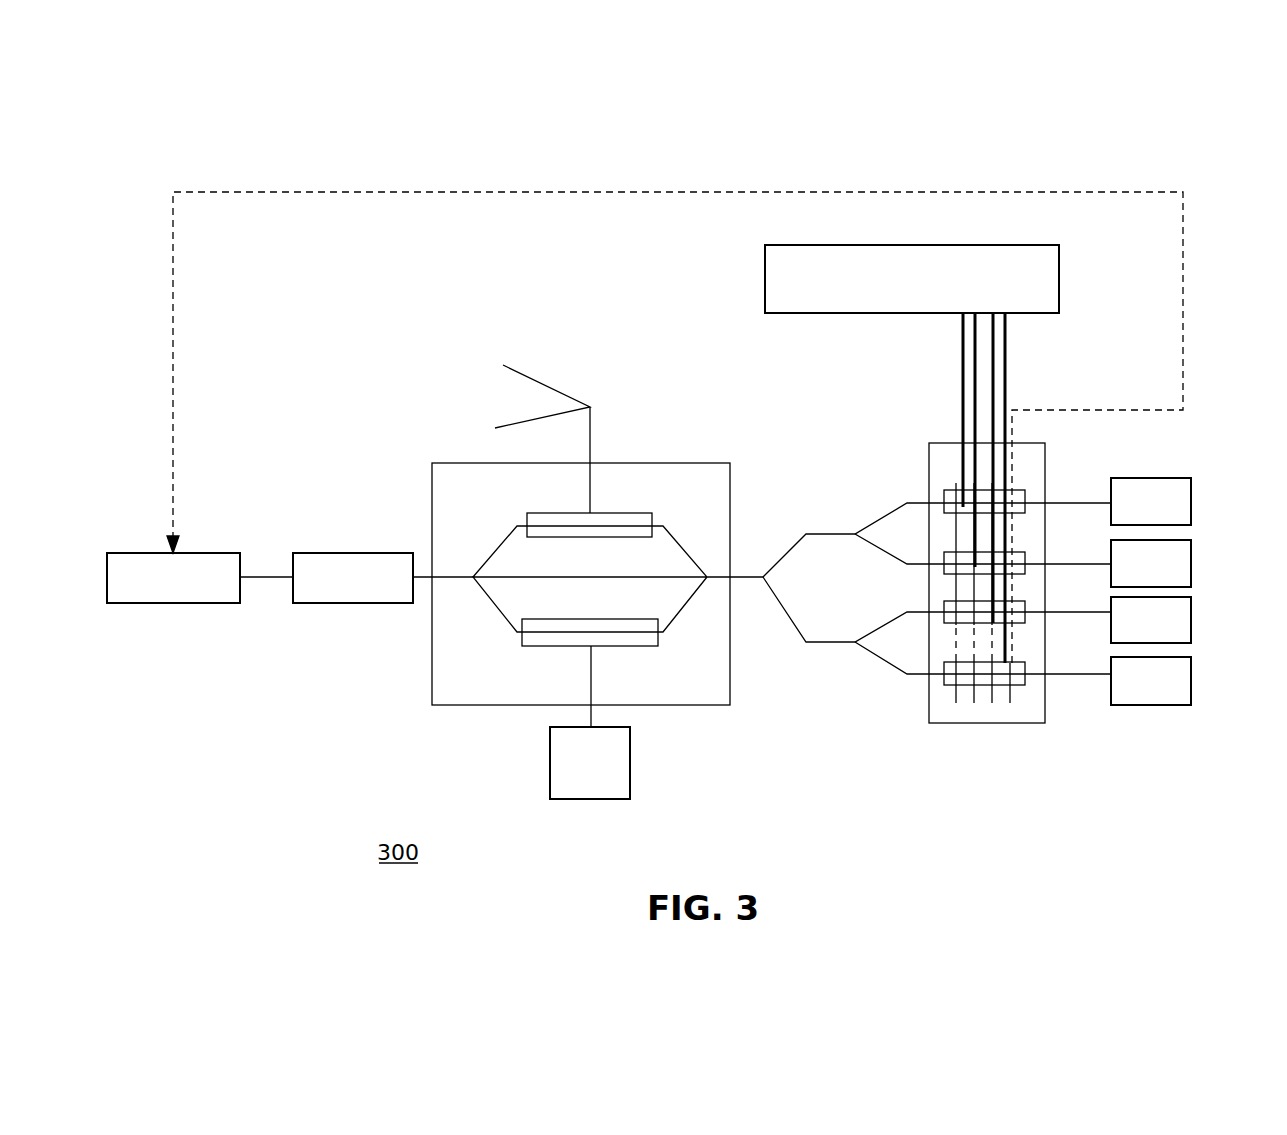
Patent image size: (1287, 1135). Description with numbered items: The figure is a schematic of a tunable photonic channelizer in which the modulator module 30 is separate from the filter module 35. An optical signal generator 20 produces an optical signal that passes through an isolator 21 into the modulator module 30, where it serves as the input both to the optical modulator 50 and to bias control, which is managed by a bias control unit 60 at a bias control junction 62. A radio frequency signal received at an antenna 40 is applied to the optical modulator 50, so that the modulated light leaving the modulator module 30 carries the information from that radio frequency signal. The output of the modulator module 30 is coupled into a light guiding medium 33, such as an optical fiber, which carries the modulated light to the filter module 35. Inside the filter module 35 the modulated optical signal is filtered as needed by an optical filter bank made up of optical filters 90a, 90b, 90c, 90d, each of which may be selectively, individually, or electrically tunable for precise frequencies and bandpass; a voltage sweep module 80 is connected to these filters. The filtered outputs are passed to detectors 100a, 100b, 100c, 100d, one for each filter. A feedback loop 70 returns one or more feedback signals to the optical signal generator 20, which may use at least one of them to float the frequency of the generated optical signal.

The optical signal generator 20 is at (215, 553).
The isolator 21 is at (349, 553).
The modulator module 30 is at (425, 686).
The light guiding medium 33 is at (826, 652).
The filter module 35 is at (1010, 740).
The antenna 40 is at (512, 397).
The optical modulator 50 is at (609, 512).
The bias control unit 60 is at (630, 757).
The bias control junction 62 is at (605, 618).
The feedback loop 70 is at (810, 192).
The voltage sweep module 80 is at (925, 245).
The optical filter 90a is at (1025, 492).
The optical filter 90b is at (1025, 553).
The optical filter 90c is at (1025, 602).
The optical filter 90d is at (1025, 663).
The detector 100a is at (1191, 497).
The detector 100b is at (1191, 559).
The detector 100c is at (1191, 616).
The detector 100d is at (1191, 669).